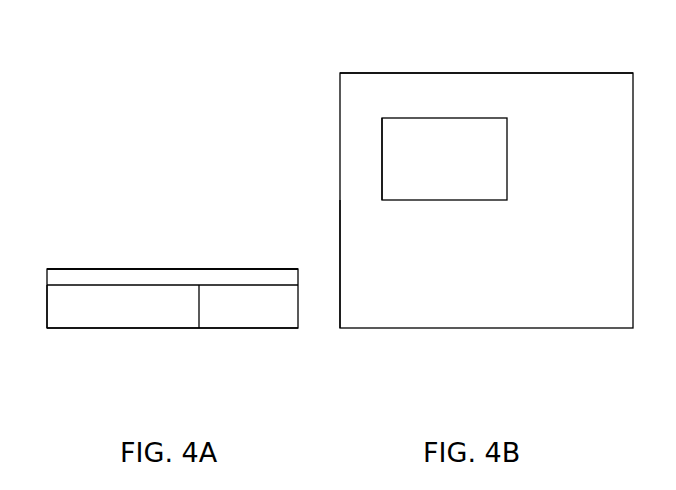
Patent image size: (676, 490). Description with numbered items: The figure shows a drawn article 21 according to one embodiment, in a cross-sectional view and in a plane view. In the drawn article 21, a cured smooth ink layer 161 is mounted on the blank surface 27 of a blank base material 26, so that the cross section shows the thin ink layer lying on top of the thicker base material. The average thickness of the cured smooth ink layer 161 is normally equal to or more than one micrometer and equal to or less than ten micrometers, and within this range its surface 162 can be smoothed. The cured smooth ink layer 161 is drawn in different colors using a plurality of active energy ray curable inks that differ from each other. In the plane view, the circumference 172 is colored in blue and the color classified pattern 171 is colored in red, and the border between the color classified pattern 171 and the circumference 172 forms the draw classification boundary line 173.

In FIG. 4A, the drawn article 21 is at (98, 263).
In FIG. 4B, the drawn article 21 is at (428, 69).
In FIG. 4A, the blank base material 26 is at (143, 328).
In FIG. 4A, the blank surface 27 is at (199, 328).
In FIG. 4A, the cured smooth ink layer 161 is at (181, 278).
In FIG. 4B, the cured smooth ink layer 161 is at (378, 232).
In FIG. 4A, the surface 162 is at (219, 270).
In FIG. 4B, the color classified pattern 171 is at (393, 135).
In FIG. 4B, the circumference 172 is at (365, 93).
In FIG. 4B, the draw classification boundary line 173 is at (382, 163).